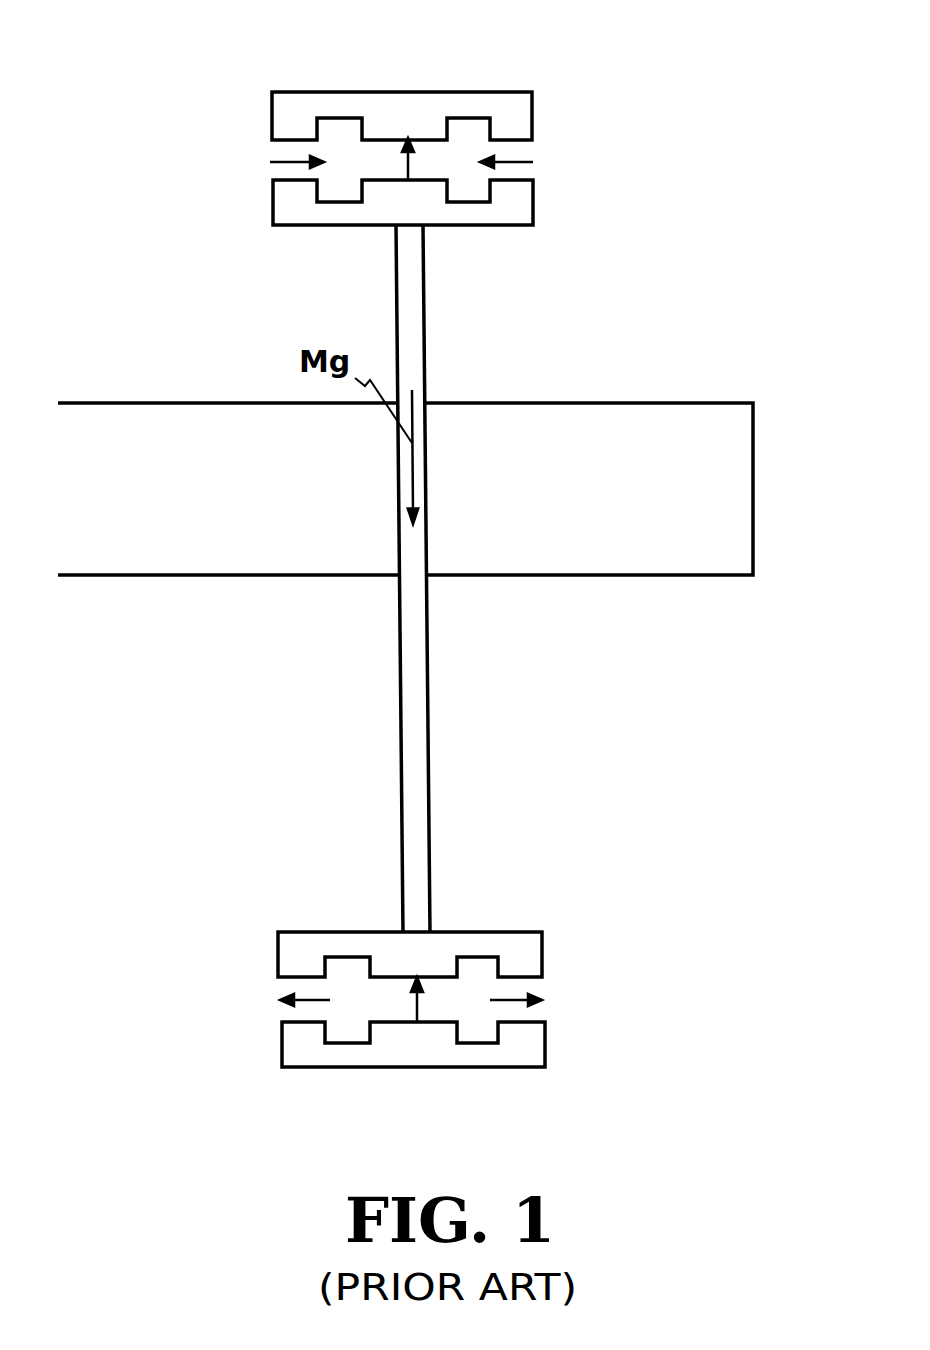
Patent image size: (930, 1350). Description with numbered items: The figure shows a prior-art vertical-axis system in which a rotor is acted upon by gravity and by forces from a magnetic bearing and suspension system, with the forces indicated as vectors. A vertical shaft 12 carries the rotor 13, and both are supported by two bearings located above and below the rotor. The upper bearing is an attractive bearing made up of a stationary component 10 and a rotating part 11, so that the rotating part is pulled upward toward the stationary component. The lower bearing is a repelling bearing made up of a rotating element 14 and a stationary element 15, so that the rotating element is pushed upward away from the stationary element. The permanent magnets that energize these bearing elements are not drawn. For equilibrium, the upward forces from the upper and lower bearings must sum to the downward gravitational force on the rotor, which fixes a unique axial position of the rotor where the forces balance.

The stationary component 10 is at (493, 92).
The rotating part 11 is at (533, 202).
The shaft 12 is at (424, 342).
The rotor 13 is at (177, 403).
The rotating element 14 is at (500, 932).
The stationary element 15 is at (505, 1067).